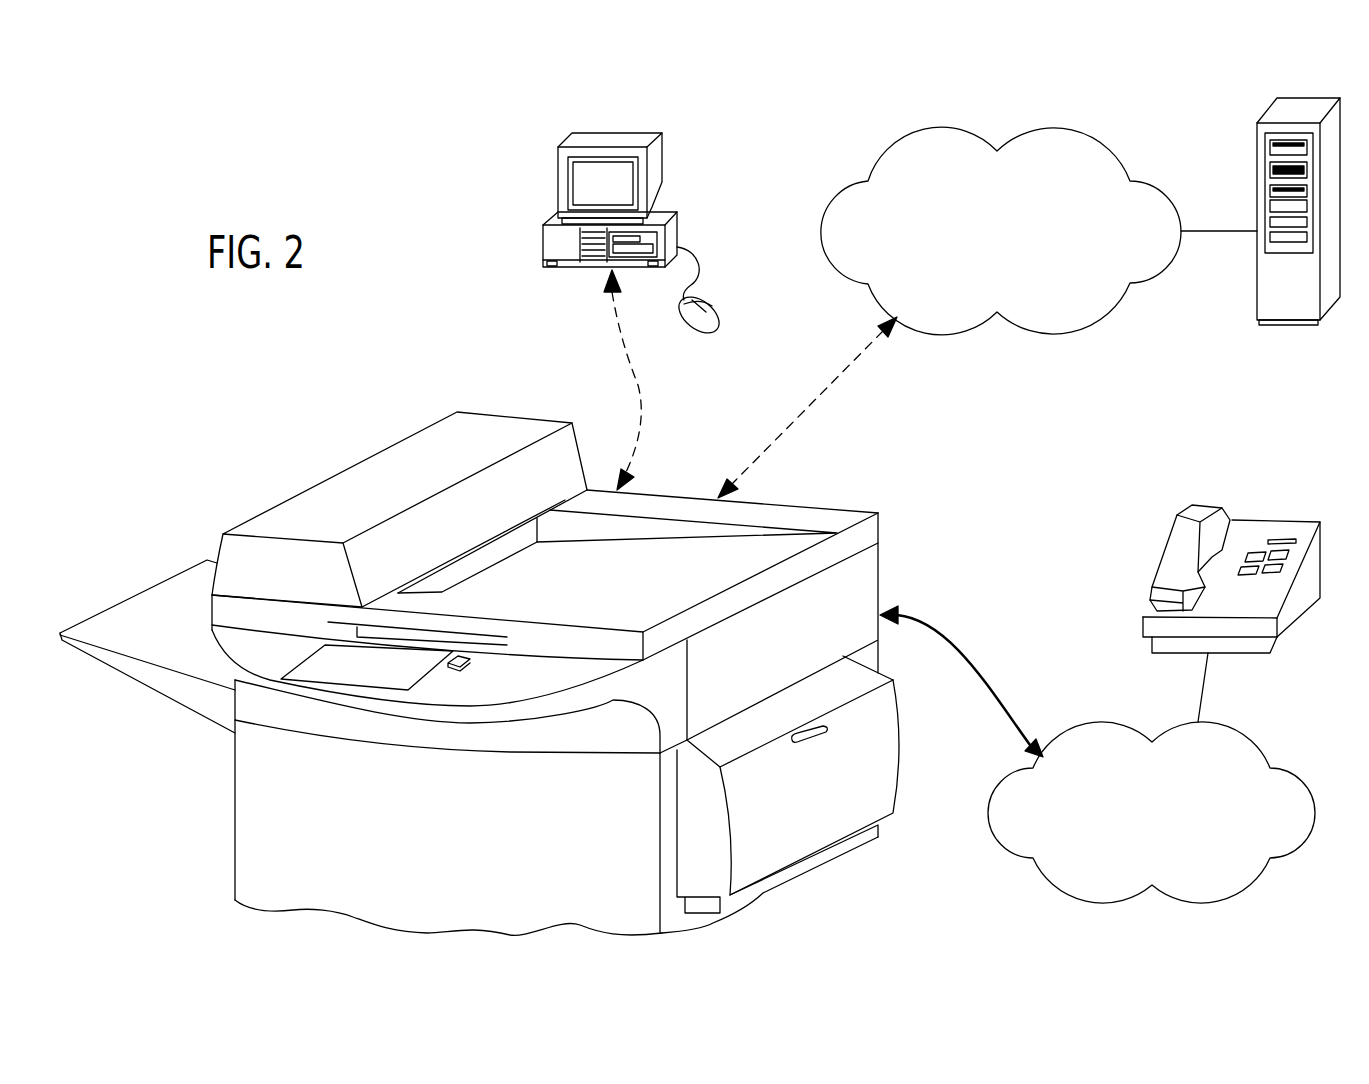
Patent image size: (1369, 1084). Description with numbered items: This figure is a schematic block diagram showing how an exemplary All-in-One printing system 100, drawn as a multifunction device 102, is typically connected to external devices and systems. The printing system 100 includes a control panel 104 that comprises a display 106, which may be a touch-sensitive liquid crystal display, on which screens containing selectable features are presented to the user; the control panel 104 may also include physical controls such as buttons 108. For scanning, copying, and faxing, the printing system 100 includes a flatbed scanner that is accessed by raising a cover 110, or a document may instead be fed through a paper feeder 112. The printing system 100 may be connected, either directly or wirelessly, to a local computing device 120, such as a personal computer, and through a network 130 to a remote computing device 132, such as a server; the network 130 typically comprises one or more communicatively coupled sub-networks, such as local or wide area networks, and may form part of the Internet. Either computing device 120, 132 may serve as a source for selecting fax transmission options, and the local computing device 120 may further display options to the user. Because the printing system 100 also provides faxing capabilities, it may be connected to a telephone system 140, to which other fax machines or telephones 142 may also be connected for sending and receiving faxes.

The printing system 100 is at (304, 428).
The multifunction peripheral device 102 is at (903, 478).
The control panel 104 is at (532, 667).
The display 106 is at (360, 680).
The buttons 108 is at (478, 679).
The cover 110 is at (487, 608).
The paper feeder 112 is at (470, 567).
The local computing device 120 is at (552, 245).
The network 130 is at (1020, 256).
The remote computing device 132 is at (1267, 298).
The telephone system 140 is at (1133, 838).
The telephones 142 is at (1193, 515).